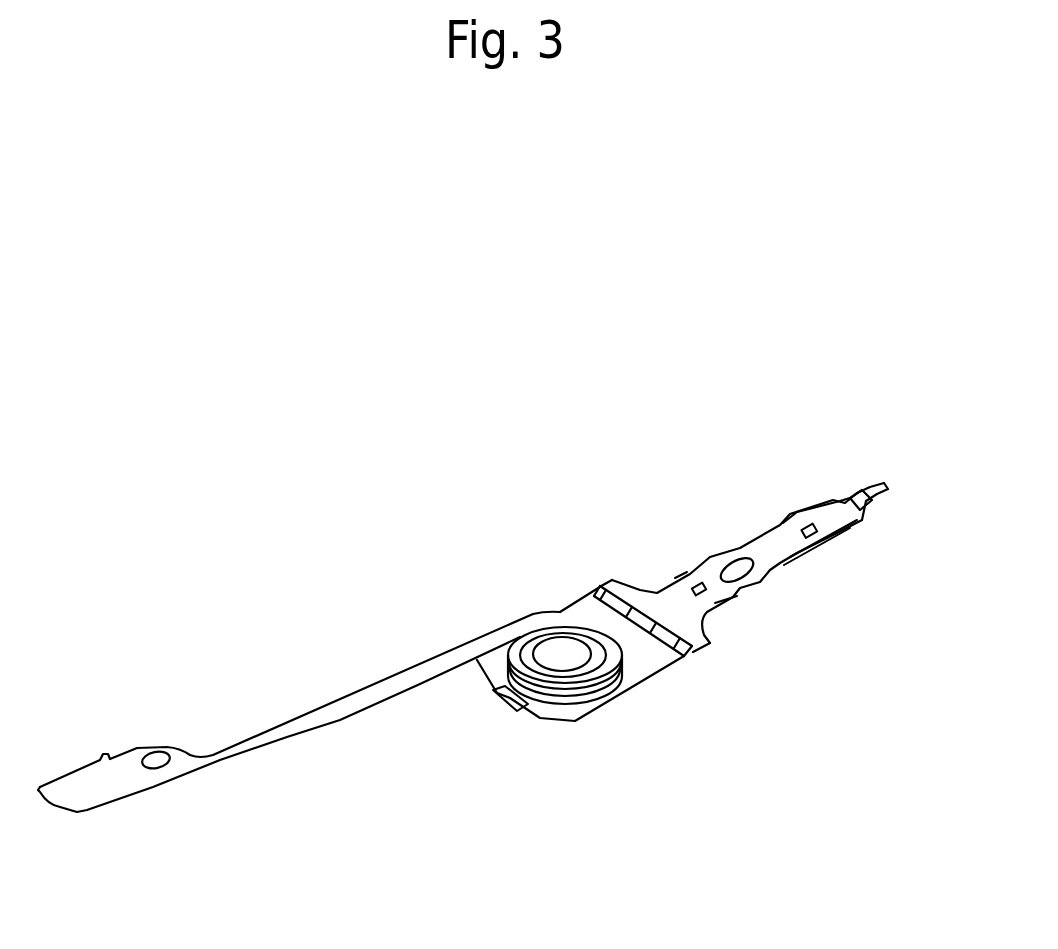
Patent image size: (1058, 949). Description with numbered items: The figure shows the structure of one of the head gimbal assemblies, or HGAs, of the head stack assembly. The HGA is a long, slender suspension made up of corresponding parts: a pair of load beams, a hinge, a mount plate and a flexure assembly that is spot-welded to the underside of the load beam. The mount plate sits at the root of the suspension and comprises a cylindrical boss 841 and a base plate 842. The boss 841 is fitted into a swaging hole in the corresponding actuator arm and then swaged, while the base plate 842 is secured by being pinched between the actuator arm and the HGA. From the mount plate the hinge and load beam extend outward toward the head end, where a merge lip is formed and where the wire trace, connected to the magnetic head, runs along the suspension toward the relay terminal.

The boss 841 is at (562, 630).
The base plate 842 is at (512, 683).